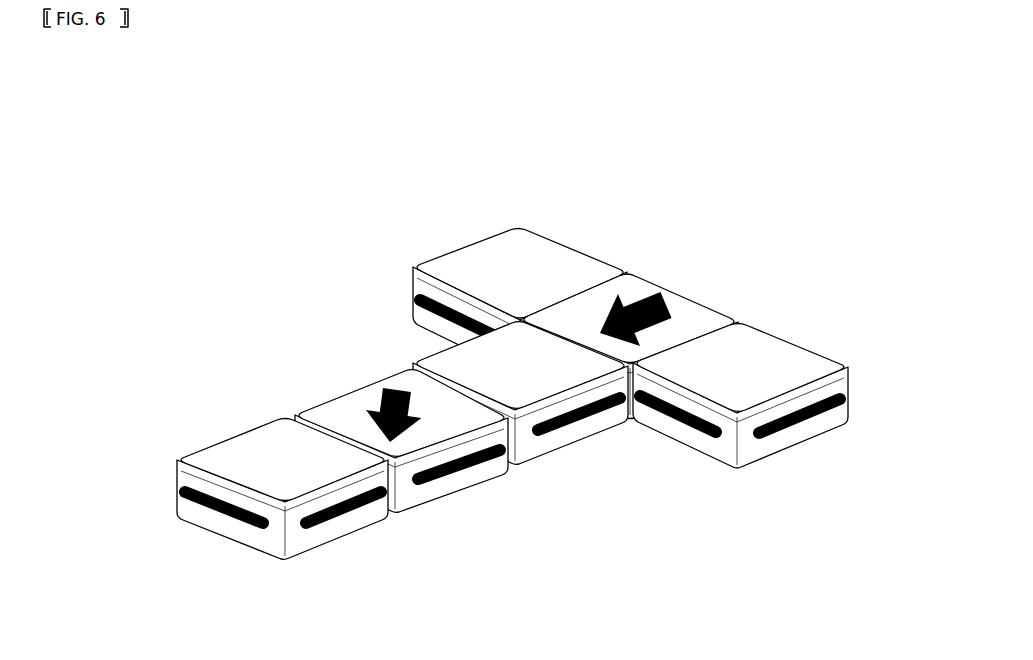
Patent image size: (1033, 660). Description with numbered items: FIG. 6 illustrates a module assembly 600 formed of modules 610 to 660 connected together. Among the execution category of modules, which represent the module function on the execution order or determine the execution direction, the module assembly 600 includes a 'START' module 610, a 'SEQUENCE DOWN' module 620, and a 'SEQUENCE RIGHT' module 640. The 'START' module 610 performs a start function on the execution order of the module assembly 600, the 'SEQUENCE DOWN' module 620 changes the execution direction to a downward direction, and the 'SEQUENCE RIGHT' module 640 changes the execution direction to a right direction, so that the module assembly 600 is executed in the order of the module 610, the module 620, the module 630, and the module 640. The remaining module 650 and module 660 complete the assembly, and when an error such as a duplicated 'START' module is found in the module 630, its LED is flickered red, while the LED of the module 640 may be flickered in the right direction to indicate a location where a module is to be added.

The module assembly 600 is at (533, 336).
The 'START' module 610 is at (478, 236).
The 'SEQUENCE DOWN' module 620 is at (683, 285).
The module 630 is at (437, 343).
The 'SEQUENCE RIGHT' module 640 is at (347, 386).
The module 650 is at (237, 428).
The module 660 is at (828, 443).